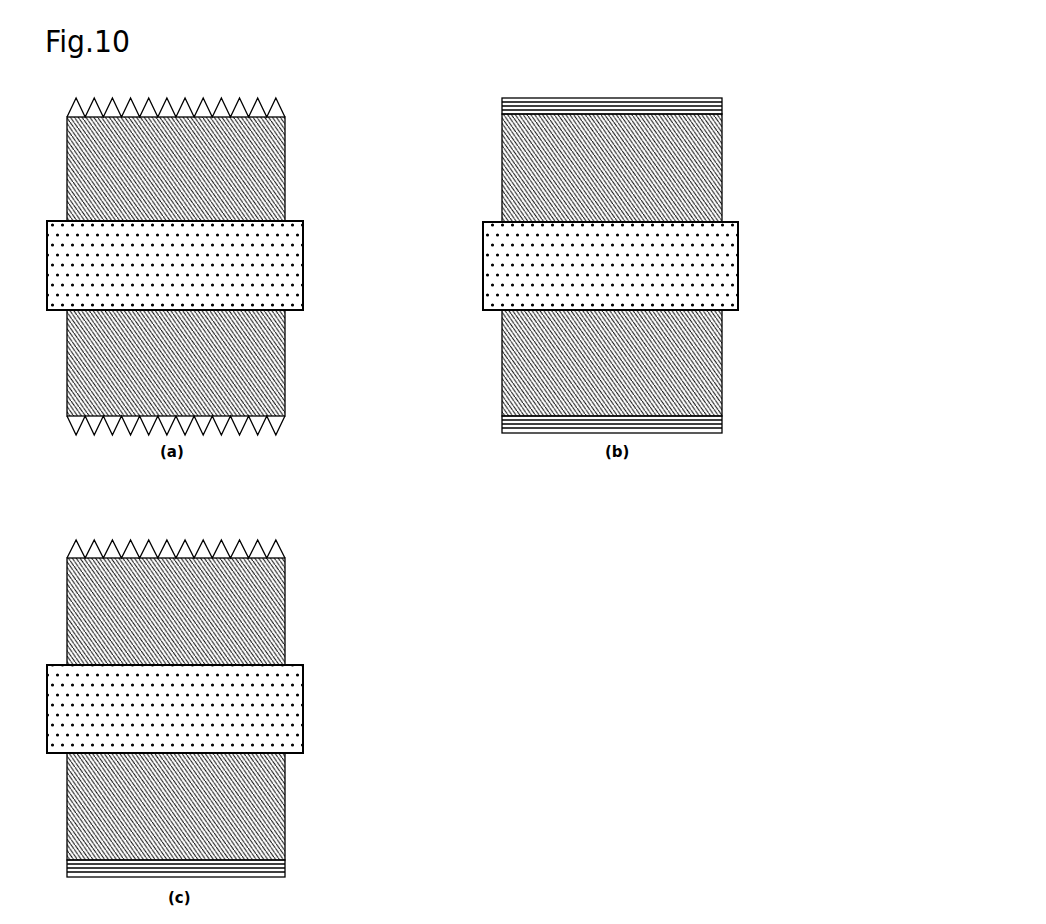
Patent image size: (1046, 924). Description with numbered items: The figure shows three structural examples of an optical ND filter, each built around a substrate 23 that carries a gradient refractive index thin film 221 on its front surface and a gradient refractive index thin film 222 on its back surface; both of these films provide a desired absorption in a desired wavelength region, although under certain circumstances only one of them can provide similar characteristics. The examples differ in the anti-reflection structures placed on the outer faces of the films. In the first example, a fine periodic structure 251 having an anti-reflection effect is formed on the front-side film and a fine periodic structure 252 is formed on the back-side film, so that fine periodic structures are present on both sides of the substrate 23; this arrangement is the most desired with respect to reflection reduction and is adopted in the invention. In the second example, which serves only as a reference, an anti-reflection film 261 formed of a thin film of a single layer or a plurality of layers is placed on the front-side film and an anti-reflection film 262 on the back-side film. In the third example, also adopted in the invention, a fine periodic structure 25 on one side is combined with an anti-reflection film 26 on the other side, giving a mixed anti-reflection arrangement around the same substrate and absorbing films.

The fine periodic structure 251 is at (292, 87).
The fine periodic structure 252 is at (292, 410).
The gradient refractive index thin film 221 is at (394, 389).
The gradient refractive index thin film 222 is at (394, 585).
The substrate 23 is at (392, 487).
The anti-reflection film 261 is at (728, 87).
The anti-reflection film 262 is at (728, 410).
The fine periodic structure 25 is at (292, 530).
The anti-reflection film 26 is at (288, 853).